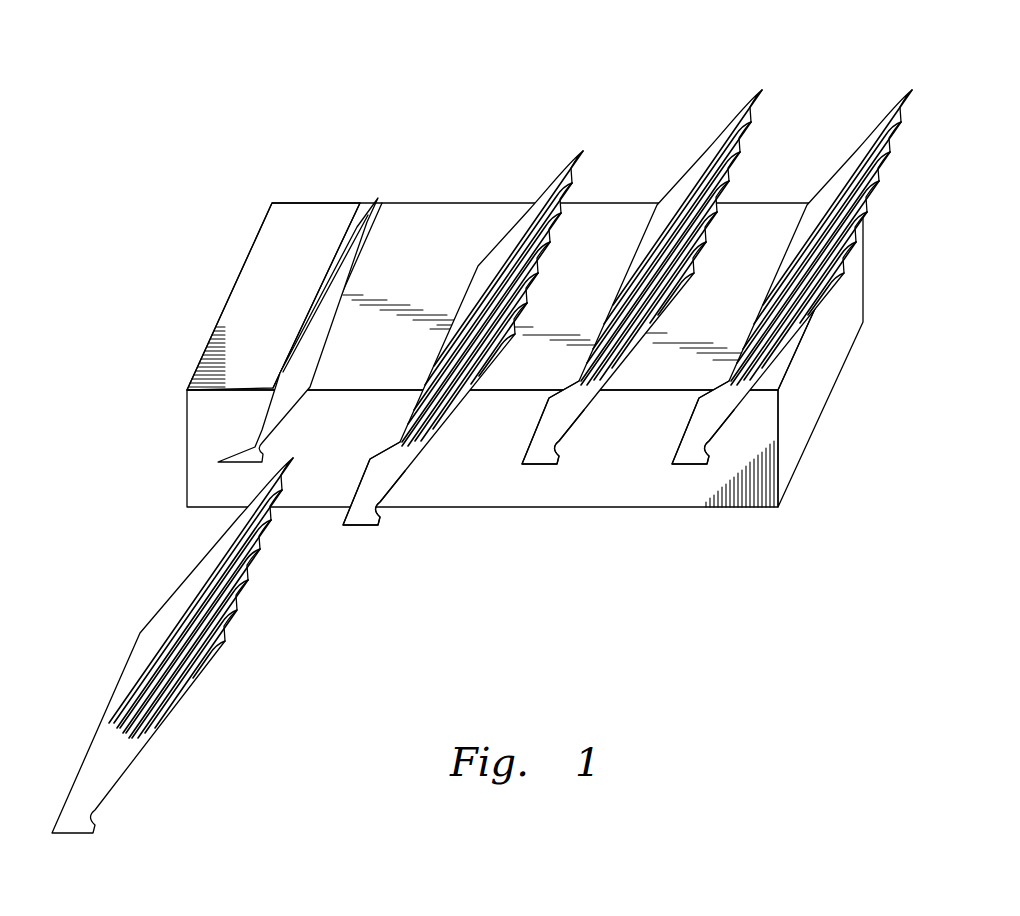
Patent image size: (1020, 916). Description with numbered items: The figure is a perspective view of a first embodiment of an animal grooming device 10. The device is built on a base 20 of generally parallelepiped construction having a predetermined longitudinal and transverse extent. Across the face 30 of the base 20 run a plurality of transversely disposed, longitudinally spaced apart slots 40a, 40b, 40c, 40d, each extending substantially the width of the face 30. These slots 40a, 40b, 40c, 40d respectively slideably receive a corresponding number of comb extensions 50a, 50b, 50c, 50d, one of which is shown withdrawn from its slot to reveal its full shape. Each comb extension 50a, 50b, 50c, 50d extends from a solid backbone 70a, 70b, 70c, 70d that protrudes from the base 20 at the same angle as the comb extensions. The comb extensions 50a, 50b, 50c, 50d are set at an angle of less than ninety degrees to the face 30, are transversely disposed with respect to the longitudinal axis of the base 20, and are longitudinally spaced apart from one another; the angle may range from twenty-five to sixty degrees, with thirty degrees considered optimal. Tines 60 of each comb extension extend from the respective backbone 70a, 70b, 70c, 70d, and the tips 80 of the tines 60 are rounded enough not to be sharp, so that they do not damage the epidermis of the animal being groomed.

The animal grooming device 10 is at (482, 436).
The base 20 is at (240, 272).
The face 30 is at (296, 230).
The slot 40a is at (362, 233).
The slot 40b is at (460, 351).
The slot 40c is at (642, 305).
The slot 40d is at (792, 320).
The comb extension 50a is at (181, 657).
The comb extension 50b is at (363, 526).
The comb extension 50c is at (543, 465).
The comb extension 50d is at (690, 465).
The tines 60 is at (162, 693).
The backbone 70a is at (130, 688).
The backbone 70b is at (438, 362).
The backbone 70c is at (640, 247).
The backbone 70d is at (760, 340).
The tips 80 is at (217, 647).